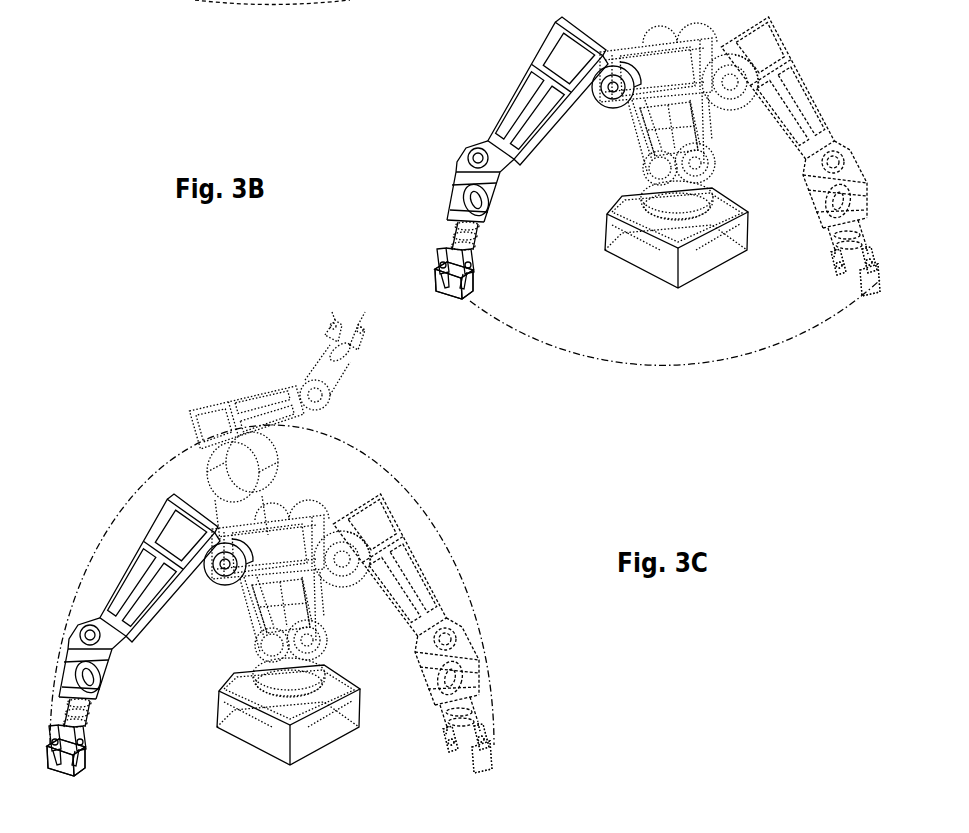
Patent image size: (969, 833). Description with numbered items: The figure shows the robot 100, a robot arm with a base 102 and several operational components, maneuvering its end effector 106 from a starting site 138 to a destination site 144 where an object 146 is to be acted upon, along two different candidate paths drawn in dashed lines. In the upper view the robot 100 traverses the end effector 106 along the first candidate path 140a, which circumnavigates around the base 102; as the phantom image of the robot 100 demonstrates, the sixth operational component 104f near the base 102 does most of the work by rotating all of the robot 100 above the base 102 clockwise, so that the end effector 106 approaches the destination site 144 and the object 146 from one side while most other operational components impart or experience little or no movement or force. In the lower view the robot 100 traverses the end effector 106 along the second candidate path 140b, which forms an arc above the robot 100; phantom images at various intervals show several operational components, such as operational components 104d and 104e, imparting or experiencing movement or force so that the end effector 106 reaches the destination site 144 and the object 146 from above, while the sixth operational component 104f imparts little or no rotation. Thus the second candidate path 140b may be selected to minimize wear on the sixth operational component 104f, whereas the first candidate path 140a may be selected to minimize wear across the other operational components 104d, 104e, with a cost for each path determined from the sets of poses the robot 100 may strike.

In FIG. 3B, the robot 100 is at (503, 55).
In FIG. 3C, the robot 100 is at (186, 395).
In FIG. 3B, the base 102 is at (647, 254).
In FIG. 3C, the base 102 is at (247, 727).
In FIG. 3C, the operational component 104d is at (226, 567).
In FIG. 3C, the operational component 104e is at (310, 637).
In FIG. 3B, the sixth operational component 104f is at (670, 220).
In FIG. 3C, the sixth operational component 104f is at (300, 697).
In FIG. 3B, the end effector 106 is at (467, 249).
In FIG. 3C, the end effector 106 is at (73, 731).
In FIG. 3B, the starting site 138 is at (832, 303).
In FIG. 3C, the starting site 138 is at (492, 809).
In FIG. 3B, the destination site 144 is at (472, 323).
In FIG. 3C, the destination site 144 is at (73, 810).
In FIG. 3B, the object 146 is at (443, 289).
In FIG. 3C, the object 146 is at (62, 777).
In FIG. 3B, the first candidate path 140a is at (533, 339).
In FIG. 3C, the second candidate path 140b is at (418, 492).